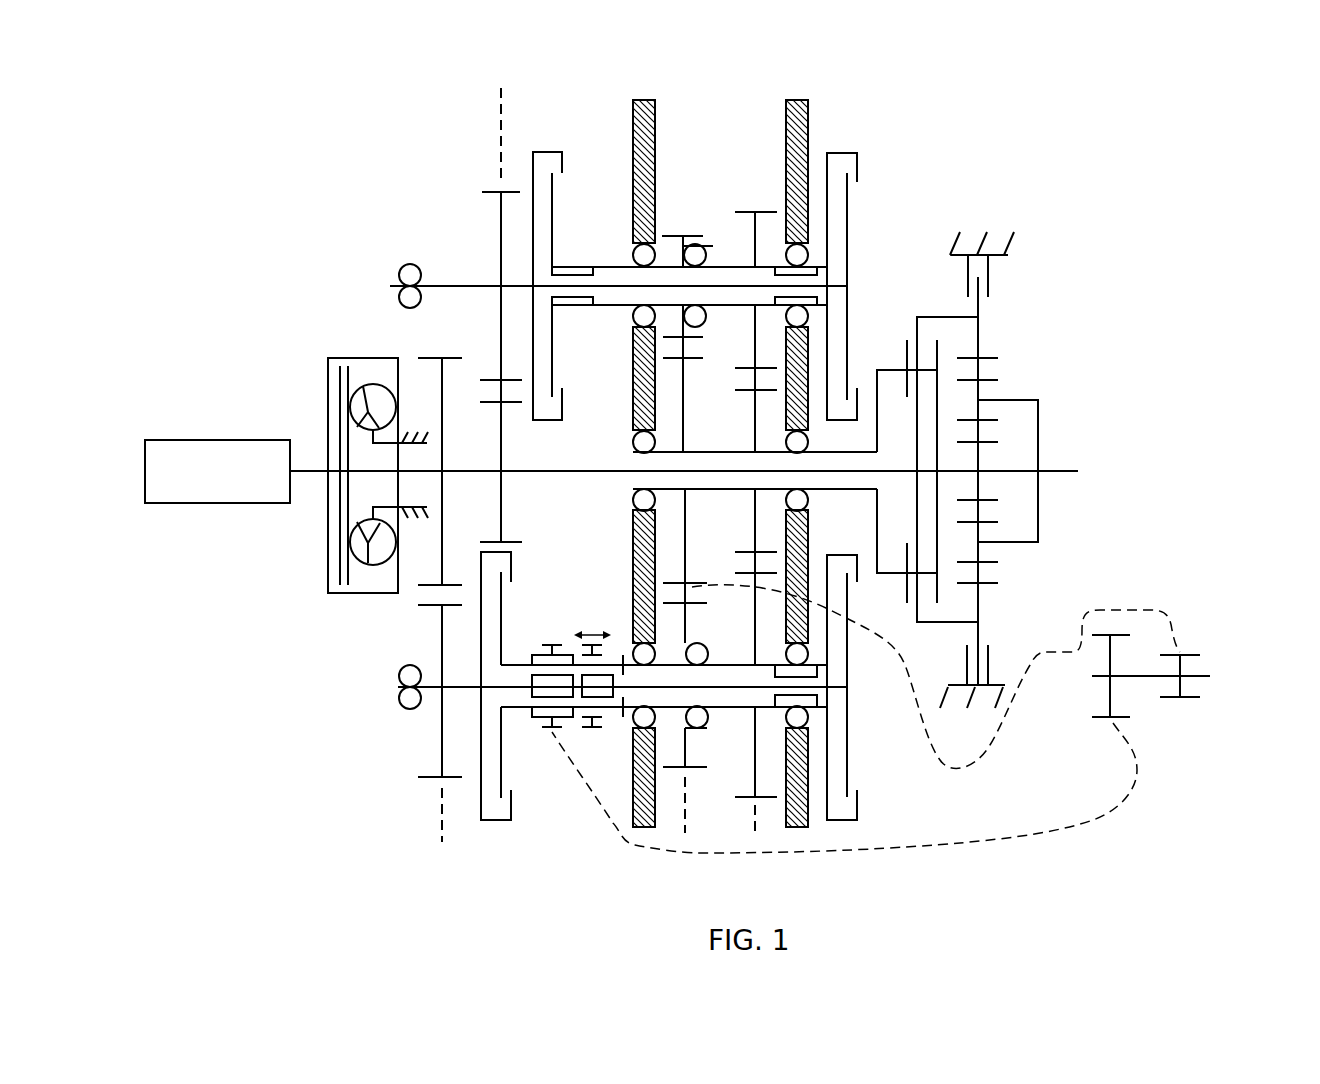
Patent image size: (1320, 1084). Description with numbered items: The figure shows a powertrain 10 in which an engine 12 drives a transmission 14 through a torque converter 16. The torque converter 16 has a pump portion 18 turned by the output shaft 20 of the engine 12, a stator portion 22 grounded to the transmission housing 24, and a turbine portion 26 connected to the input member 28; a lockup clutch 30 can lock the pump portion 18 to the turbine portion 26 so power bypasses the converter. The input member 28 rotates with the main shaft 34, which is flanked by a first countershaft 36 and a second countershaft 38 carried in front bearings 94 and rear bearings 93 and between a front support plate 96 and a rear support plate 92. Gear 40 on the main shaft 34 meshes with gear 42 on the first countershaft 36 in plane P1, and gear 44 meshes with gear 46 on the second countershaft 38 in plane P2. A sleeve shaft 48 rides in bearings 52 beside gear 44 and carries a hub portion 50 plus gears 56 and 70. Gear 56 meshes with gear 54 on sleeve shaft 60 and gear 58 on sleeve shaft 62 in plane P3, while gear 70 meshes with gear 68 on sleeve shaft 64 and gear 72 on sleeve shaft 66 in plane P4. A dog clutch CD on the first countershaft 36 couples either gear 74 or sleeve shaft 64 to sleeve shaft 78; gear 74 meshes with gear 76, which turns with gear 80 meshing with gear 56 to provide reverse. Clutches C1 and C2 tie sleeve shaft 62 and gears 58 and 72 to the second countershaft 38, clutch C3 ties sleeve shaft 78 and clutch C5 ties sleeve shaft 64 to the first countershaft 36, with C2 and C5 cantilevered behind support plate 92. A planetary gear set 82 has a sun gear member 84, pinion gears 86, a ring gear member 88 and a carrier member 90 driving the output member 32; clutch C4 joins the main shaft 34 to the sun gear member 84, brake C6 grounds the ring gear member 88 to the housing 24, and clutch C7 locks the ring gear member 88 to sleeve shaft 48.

The powertrain 10 is at (302, 220).
The engine 12 is at (226, 440).
The transmission 14 is at (387, 180).
The torque converter 16 is at (348, 338).
The pump portion 18 is at (390, 533).
The output shaft 20 is at (312, 473).
The stator portion 22 is at (363, 430).
The transmission housing 24 is at (421, 434).
The turbine portion 26 is at (357, 392).
The input member 28 is at (423, 473).
The lockup clutch 30 is at (340, 390).
The output member 32 is at (1070, 470).
The main shaft 34 is at (577, 472).
The first countershaft 36 is at (455, 687).
The second countershaft 38 is at (453, 283).
The gear 40 is at (442, 410).
The gear 42 is at (440, 633).
The gear 44 is at (503, 427).
The gear 46 is at (500, 218).
The sleeve shaft 48 is at (720, 447).
The hub portion 50 is at (877, 383).
The bearings 52 is at (633, 442).
The gear 54 is at (685, 615).
The gear 56 is at (685, 427).
The gear 58 is at (662, 236).
The sleeve shaft 60 is at (627, 643).
The sleeve shaft 62 is at (592, 267).
The sleeve shaft 64 is at (723, 710).
The sleeve shaft 66 is at (730, 260).
The gear 68 is at (752, 758).
The gear 70 is at (755, 535).
The gear 72 is at (753, 355).
The gear 74 is at (547, 722).
The gear 76 is at (1110, 697).
The sleeve shaft 78 is at (515, 665).
The gear 80 is at (1182, 687).
The planetary gear set 82 is at (1033, 553).
The sun gear member 84 is at (987, 443).
The pinion gears 86 is at (980, 390).
The ring gear member 88 is at (988, 357).
The carrier member 90 is at (1040, 408).
The support plate 92 is at (797, 100).
The bearings 93 is at (783, 247).
The bearings 94 is at (403, 267).
The support plate 96 is at (647, 100).
The rotary clutch C1 is at (557, 183).
The rotary clutch C2 is at (852, 188).
The rotary clutch C3 is at (509, 767).
The rotary clutch C4 is at (910, 402).
The rotary clutch C5 is at (858, 762).
The brake C6 is at (988, 308).
The rotary clutch C7 is at (906, 316).
The dog clutch CD is at (600, 740).
The plane P1 is at (440, 817).
The plane P2 is at (500, 118).
The plane P3 is at (686, 798).
The plane P4 is at (757, 810).